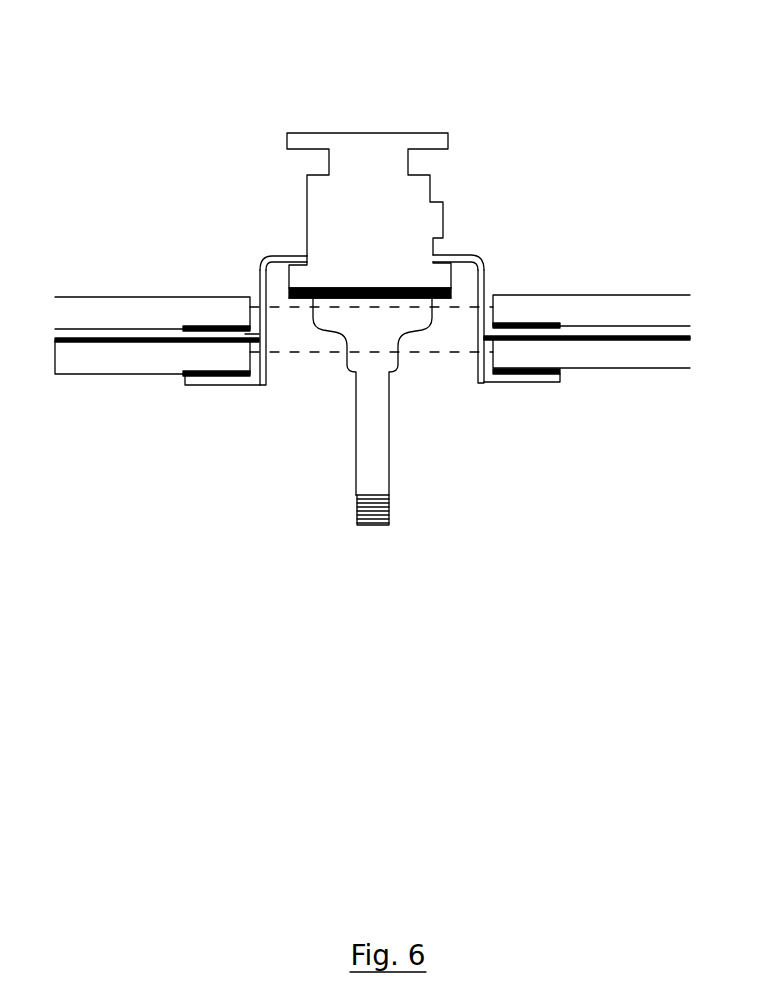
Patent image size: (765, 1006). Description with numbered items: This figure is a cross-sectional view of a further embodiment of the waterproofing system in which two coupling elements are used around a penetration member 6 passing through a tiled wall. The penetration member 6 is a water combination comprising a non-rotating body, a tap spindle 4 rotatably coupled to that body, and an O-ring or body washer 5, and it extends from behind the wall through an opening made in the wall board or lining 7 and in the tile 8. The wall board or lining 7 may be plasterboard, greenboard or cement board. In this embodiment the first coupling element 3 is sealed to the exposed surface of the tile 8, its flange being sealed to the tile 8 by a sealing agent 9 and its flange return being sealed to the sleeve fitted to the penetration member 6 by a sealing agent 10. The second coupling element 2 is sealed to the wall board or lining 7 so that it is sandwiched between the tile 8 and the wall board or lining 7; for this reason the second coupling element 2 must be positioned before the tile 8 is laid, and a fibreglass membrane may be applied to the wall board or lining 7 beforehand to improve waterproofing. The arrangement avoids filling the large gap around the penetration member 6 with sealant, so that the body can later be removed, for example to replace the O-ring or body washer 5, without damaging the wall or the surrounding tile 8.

The second coupling element 2 is at (248, 308).
The first coupling element 3 is at (213, 385).
The tap spindle 4 is at (361, 472).
The O-ring or body washer 5 is at (288, 286).
The penetration member 6 is at (376, 137).
The wall board or lining 7 is at (187, 299).
The tile 8 is at (82, 376).
The sealing agent 9 is at (187, 329).
The sealing agent 10 is at (255, 385).